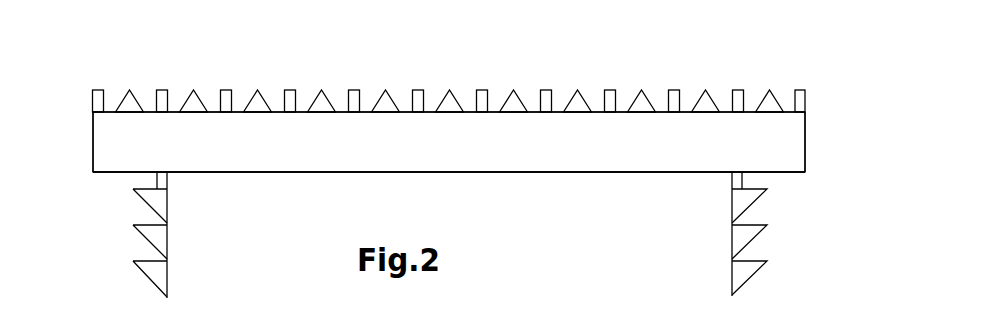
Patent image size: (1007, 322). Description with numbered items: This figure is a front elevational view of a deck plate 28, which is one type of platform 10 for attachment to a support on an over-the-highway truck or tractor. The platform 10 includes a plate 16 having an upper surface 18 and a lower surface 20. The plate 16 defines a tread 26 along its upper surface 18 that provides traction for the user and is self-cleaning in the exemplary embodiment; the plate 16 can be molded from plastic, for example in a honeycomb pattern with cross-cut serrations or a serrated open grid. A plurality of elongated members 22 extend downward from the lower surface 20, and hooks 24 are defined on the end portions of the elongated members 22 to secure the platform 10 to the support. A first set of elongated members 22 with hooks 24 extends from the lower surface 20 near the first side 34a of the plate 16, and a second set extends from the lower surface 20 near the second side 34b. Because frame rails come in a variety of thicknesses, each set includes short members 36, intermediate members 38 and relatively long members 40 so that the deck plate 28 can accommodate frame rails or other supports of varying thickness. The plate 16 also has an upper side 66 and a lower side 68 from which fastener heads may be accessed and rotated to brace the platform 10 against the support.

The platform 10 is at (391, 56).
The plate 16 is at (173, 126).
The upper surface 18 is at (279, 110).
The lower surface 20 is at (330, 172).
The elongated members 22 is at (168, 181).
The hooks 24 is at (147, 196).
The tread 26 is at (577, 100).
The deck plate 28 is at (500, 74).
The first side 34a is at (92, 130).
The second side 34b is at (806, 132).
The short members 36 is at (160, 198).
The intermediate members 38 is at (158, 235).
The relatively long members 40 is at (160, 273).
The upper side 66 is at (668, 65).
The lower side 68 is at (498, 185).